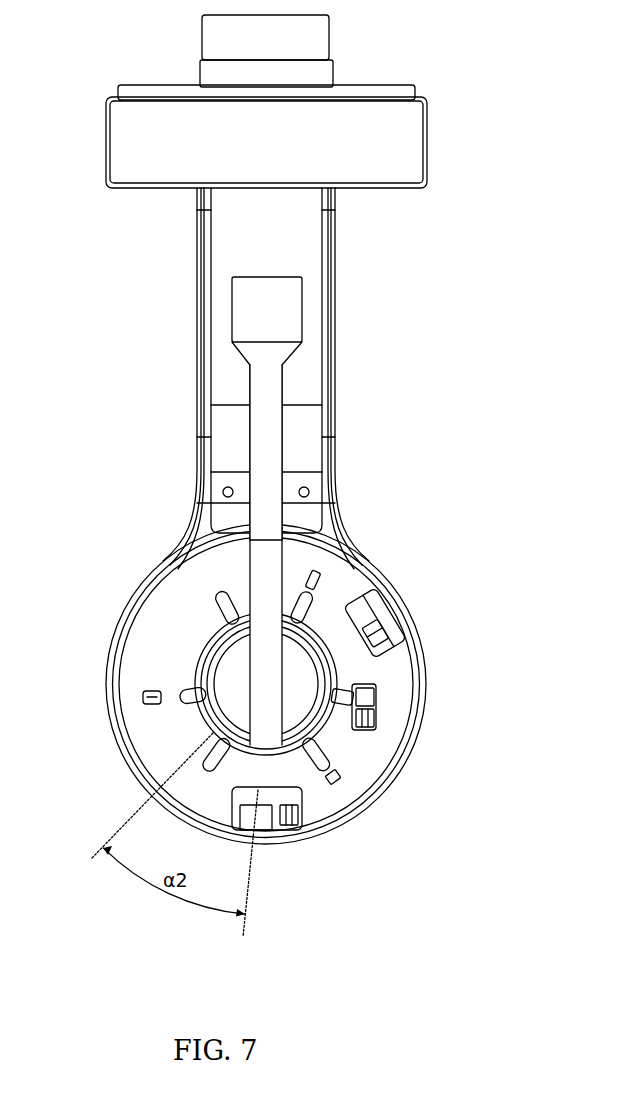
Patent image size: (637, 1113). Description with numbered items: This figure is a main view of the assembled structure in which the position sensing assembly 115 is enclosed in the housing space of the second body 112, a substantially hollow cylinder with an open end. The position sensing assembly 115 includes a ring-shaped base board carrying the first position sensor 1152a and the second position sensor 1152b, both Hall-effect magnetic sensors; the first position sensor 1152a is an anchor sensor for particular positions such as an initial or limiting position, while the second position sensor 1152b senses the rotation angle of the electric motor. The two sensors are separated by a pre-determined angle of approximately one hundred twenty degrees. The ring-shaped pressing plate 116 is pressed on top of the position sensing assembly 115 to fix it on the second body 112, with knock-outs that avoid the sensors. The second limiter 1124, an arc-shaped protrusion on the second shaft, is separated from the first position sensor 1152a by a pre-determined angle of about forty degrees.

The second body 112 is at (422, 720).
The position sensing assembly 115 is at (380, 638).
The pressing plate 116 is at (367, 758).
The second limiter 1124 is at (212, 710).
The first position sensor 1152a is at (262, 822).
The second position sensor 1152b is at (373, 603).